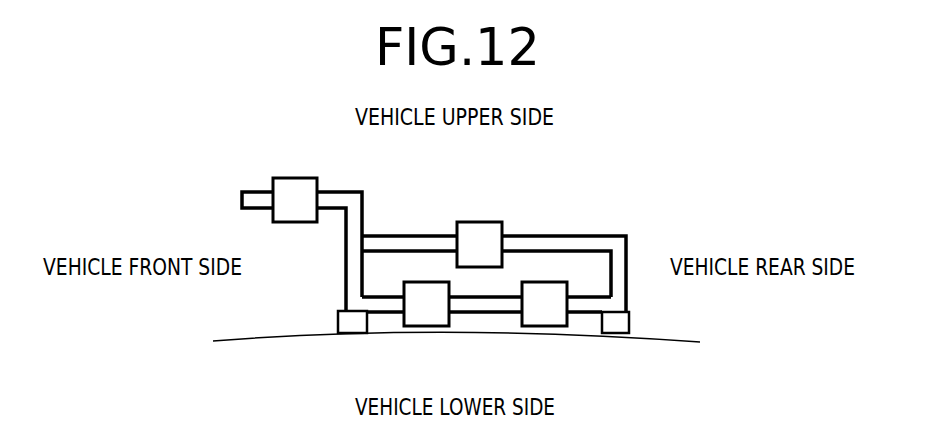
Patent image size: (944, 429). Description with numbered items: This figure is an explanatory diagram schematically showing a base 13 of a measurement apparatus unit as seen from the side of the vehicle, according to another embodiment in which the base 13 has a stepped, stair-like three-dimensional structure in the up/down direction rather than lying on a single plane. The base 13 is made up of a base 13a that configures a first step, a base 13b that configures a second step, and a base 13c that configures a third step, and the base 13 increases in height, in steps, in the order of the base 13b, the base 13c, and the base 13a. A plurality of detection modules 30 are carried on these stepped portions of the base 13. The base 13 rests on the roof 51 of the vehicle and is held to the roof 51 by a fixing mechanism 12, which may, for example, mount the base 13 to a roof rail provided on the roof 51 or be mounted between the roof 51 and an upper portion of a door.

The base 13 is at (424, 254).
The base configuring first step 13a is at (260, 192).
The base configuring second step 13b is at (476, 314).
The base configuring third step 13c is at (547, 236).
The detection module 30 is at (420, 252).
The fixing mechanism 12 is at (352, 323).
The roof 51 is at (318, 333).